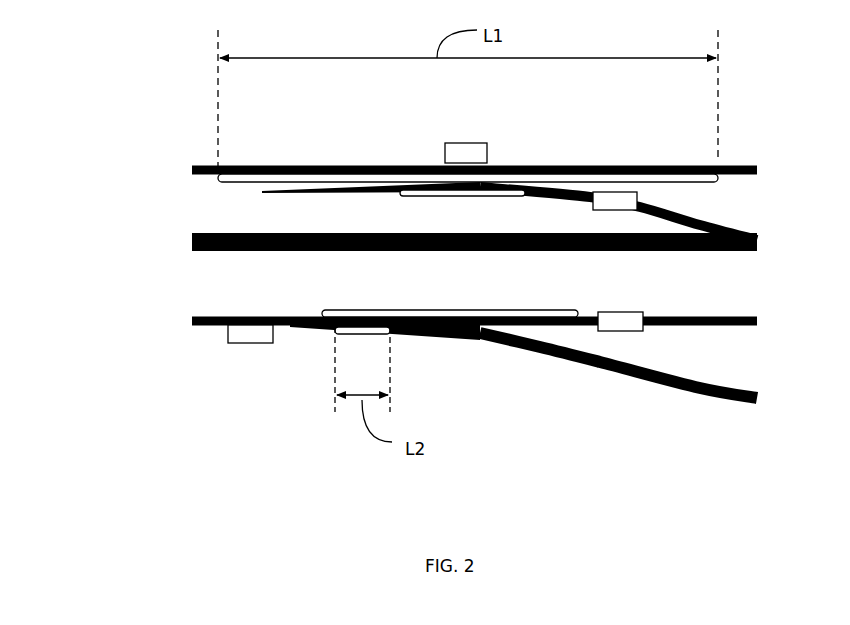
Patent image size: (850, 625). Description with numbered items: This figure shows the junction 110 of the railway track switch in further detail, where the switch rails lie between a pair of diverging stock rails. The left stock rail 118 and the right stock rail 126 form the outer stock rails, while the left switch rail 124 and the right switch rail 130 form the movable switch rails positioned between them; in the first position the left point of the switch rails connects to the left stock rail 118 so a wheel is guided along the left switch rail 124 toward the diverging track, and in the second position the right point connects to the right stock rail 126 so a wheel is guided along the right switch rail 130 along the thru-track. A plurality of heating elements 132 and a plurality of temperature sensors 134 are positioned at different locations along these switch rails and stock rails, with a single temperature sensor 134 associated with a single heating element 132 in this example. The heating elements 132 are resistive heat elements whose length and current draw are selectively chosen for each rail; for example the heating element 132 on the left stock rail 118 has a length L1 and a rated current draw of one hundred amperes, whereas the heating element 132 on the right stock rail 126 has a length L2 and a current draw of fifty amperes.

The junction 110 is at (133, 433).
The left stock rail 118 is at (757, 168).
The left switch rail 124 is at (757, 240).
The right stock rail 126 is at (757, 397).
The right switch rail 130 is at (757, 316).
The heating element 132 is at (268, 178).
The temperature sensor 134 is at (472, 150).